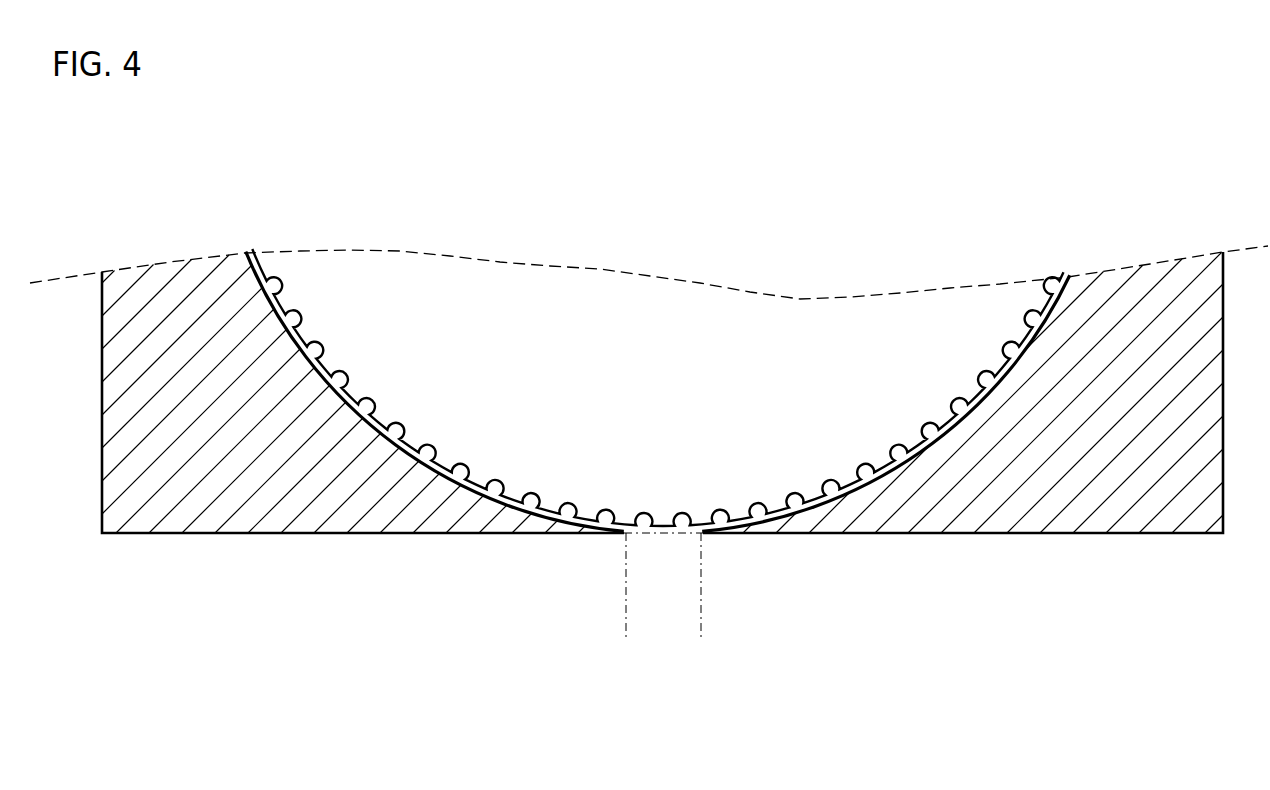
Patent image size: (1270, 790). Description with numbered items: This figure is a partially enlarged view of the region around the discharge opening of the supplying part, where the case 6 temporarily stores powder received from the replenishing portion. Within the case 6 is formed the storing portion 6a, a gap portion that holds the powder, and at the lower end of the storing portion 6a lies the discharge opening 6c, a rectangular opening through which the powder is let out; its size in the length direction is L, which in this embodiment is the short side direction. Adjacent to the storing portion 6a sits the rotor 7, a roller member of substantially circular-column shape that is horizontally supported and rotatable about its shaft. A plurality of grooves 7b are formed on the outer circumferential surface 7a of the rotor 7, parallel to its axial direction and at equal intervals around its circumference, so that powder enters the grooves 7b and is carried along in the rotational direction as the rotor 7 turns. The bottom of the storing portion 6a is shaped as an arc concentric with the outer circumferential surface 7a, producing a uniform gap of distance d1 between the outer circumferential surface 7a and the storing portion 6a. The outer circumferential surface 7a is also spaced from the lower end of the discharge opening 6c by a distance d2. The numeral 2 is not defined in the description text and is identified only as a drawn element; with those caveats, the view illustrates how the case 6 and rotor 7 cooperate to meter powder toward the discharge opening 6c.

The nozzle plate 2 is at (1058, 591).
The case 6 is at (607, 429).
The storing portion 6a is at (1003, 370).
The discharge opening 6c is at (700, 536).
The rotor 7 is at (591, 294).
The outer circumferential surface 7a is at (851, 487).
The grooves 7b is at (497, 484).
The distance d1 is at (405, 458).
The distance d2 is at (664, 573).
The size L is at (740, 631).